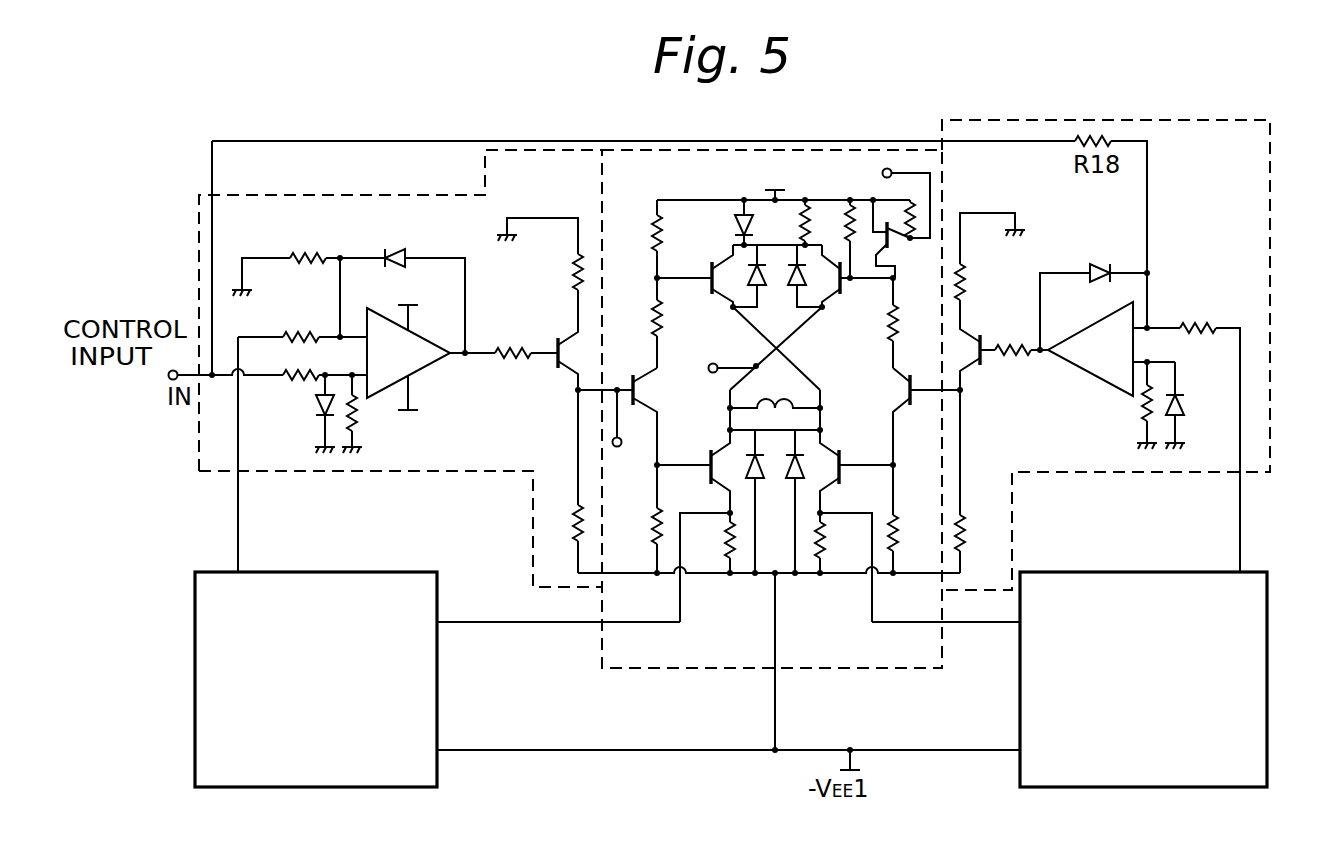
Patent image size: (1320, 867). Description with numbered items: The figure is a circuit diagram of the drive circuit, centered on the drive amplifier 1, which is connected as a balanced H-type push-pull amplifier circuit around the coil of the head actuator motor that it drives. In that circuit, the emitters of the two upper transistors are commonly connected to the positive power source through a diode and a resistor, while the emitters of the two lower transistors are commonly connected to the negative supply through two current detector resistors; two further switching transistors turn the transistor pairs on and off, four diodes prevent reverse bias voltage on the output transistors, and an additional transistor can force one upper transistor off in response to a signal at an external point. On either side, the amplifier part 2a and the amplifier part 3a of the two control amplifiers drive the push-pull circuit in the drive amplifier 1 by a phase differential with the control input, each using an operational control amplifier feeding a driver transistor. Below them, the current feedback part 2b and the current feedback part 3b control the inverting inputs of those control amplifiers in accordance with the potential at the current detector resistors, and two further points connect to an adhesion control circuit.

The drive amplifier 1 is at (722, 655).
The amplifier part of control amplifier 2 2a is at (312, 463).
The current feedback part of control amplifier 2 2b is at (305, 585).
The amplifier part of control amplifier 3 3a is at (1062, 463).
The current feedback part of control amplifier 3 3b is at (1055, 587).